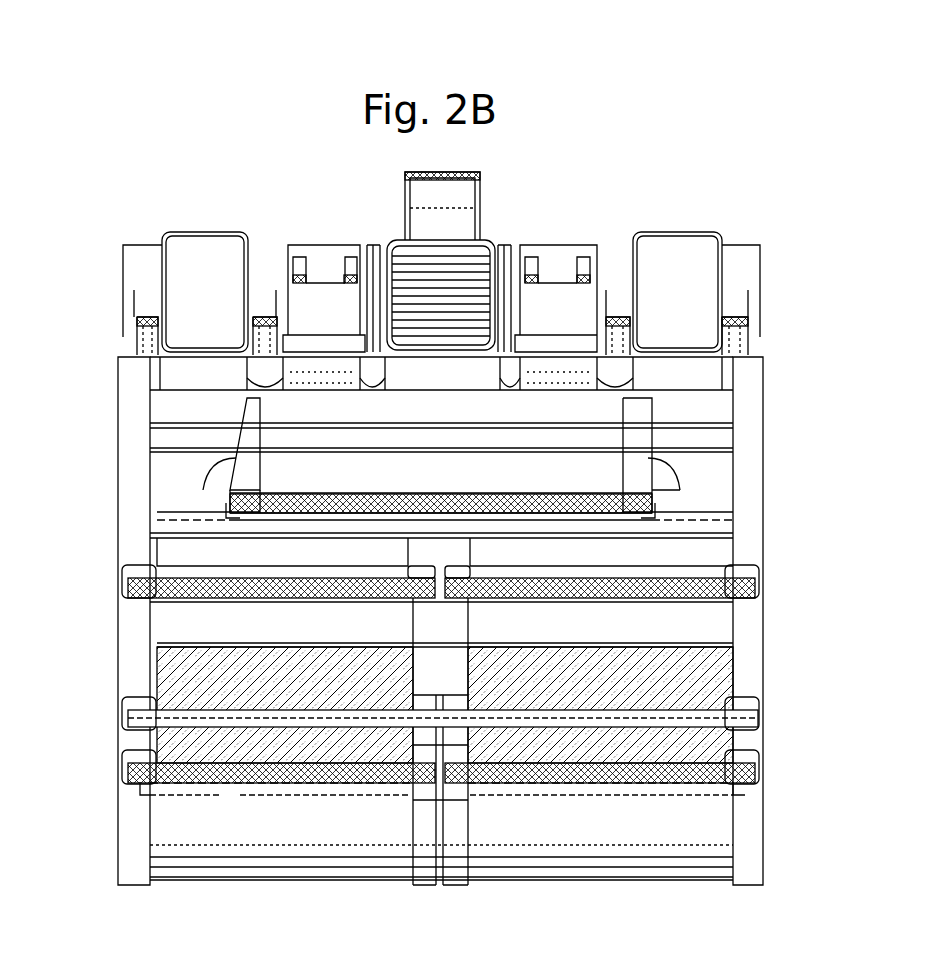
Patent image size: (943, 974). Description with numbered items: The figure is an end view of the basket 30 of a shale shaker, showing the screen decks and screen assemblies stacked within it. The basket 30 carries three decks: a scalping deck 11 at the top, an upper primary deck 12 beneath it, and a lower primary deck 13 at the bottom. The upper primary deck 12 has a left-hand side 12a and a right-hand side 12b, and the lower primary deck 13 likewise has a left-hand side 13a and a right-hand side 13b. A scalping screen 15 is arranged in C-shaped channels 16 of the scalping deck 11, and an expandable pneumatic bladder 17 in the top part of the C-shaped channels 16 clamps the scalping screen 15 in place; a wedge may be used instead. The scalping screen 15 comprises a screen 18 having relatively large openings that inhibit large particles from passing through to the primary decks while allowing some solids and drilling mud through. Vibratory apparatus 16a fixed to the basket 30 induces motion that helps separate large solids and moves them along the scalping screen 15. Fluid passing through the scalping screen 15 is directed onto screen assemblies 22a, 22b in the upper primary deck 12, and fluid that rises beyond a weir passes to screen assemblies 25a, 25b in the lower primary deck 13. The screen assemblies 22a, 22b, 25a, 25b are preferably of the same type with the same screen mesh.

The scalping deck 11 is at (520, 493).
The upper primary deck 12 is at (437, 576).
The left-hand side 12a is at (207, 599).
The right-hand side 12b is at (673, 599).
The lower primary deck 13 is at (477, 769).
The left-hand side 13a is at (348, 782).
The right-hand side 13b is at (533, 782).
The scalping screen 15 is at (412, 494).
The C-shaped channels 16 is at (232, 504).
The vibratory apparatus 16a is at (612, 240).
The expandable pneumatic bladder 17 is at (266, 492).
The screen 18 is at (433, 494).
The screen assembly 22a is at (283, 602).
The screen assembly 22b is at (595, 602).
The screen assembly 25a is at (177, 784).
The screen assembly 25b is at (680, 782).
The basket 30 is at (768, 428).